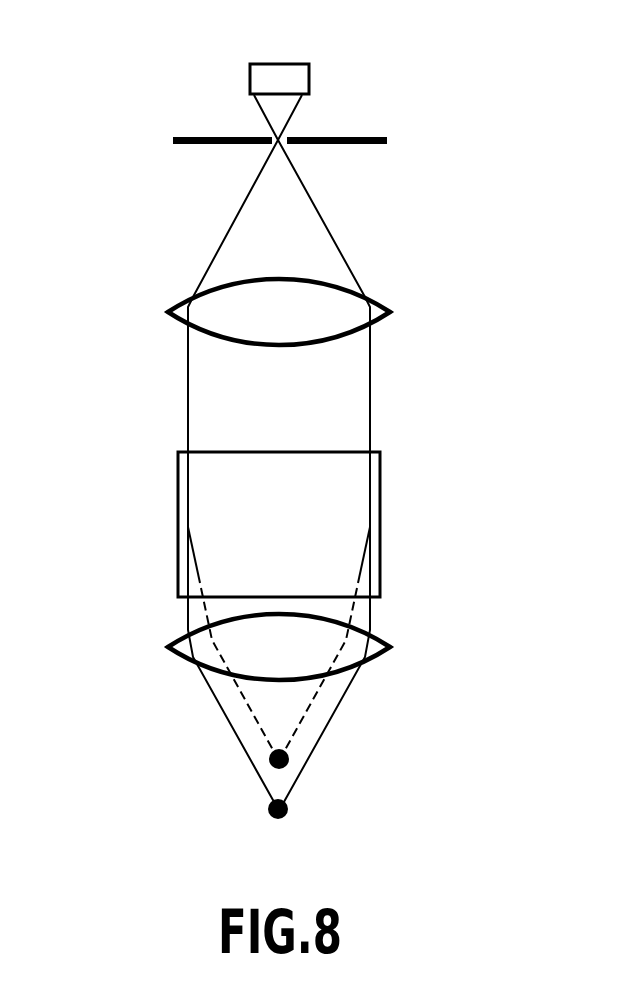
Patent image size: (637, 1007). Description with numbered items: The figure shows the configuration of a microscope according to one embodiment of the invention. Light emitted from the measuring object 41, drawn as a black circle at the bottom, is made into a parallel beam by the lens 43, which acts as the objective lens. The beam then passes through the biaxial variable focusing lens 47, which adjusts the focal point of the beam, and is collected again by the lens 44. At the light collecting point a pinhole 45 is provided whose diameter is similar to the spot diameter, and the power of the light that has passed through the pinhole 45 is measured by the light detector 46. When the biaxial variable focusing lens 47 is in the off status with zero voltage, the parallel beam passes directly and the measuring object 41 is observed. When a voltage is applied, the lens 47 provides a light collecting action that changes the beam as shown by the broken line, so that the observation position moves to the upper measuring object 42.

The measuring object 41 is at (288, 808).
The upper measuring object 42 is at (288, 754).
The lens 43 is at (183, 640).
The lens 44 is at (183, 305).
The pinhole 45 is at (273, 131).
The light detector 46 is at (309, 69).
The biaxial variable focusing lens 47 is at (178, 473).